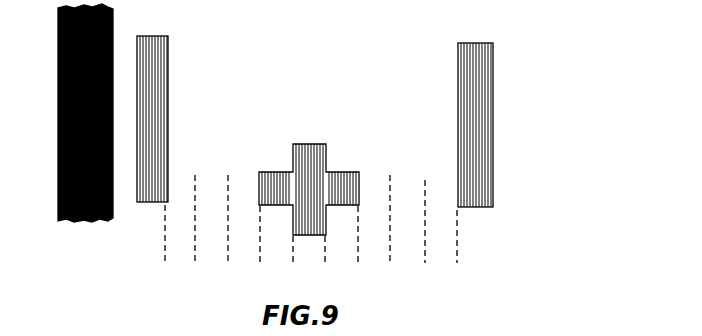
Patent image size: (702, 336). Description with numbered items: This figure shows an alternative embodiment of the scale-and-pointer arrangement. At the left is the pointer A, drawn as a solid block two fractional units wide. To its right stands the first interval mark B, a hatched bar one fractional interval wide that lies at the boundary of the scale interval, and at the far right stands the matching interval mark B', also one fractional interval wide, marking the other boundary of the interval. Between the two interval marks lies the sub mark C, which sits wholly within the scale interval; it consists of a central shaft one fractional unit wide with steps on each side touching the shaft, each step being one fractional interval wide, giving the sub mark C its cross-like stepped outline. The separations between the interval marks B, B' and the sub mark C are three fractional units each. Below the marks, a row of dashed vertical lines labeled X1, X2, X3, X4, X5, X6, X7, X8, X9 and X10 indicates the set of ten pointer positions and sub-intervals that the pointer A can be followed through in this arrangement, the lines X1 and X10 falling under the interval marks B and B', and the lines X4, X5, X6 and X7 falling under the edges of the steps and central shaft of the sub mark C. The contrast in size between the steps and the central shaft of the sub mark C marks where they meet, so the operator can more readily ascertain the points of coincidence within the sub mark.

The pointer A is at (58, 42).
The interval mark B is at (163, 119).
The interval mark B' is at (486, 125).
The sub mark C is at (310, 150).
The reference line X1 is at (165, 244).
The reference line X2 is at (195, 229).
The reference line X3 is at (229, 229).
The reference line X4 is at (262, 245).
The reference line X5 is at (293, 260).
The reference line X6 is at (325, 260).
The reference line X7 is at (358, 245).
The reference line X8 is at (391, 229).
The reference line X9 is at (426, 232).
The reference line X10 is at (460, 247).